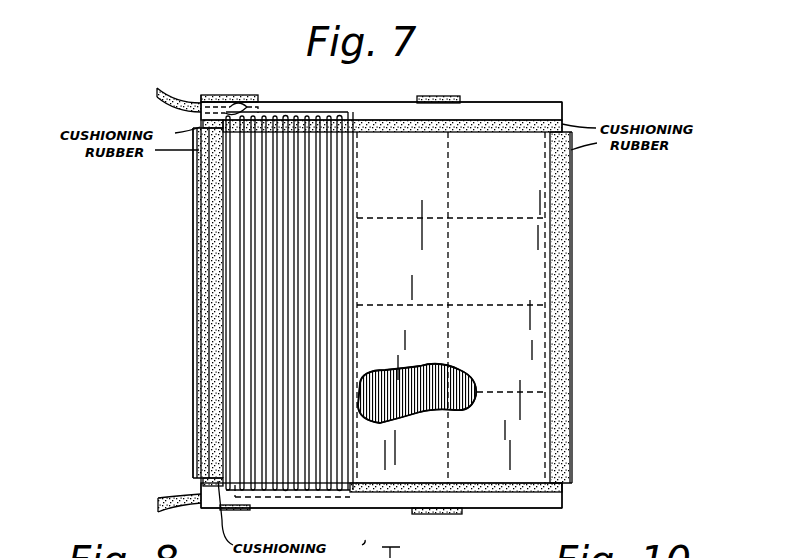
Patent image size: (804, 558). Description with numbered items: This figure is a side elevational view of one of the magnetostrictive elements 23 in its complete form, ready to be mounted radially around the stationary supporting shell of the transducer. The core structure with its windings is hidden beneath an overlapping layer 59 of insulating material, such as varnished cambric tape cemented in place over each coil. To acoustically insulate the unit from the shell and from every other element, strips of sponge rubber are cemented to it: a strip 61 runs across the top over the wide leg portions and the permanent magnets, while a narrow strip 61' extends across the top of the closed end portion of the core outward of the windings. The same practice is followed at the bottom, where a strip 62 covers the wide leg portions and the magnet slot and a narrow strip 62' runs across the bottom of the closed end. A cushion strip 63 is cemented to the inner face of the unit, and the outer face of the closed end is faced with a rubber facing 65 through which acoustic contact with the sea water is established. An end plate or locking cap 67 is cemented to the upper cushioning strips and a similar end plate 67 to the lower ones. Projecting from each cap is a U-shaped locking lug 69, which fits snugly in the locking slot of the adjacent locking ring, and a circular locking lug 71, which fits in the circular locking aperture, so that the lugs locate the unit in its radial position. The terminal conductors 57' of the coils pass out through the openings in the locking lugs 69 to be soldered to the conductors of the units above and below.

The magnetostrictive element 23 is at (183, 253).
The terminal conductor 57' is at (179, 300).
The overlapping layer of insulating material 59 is at (243, 320).
The strip of sponge rubber 61 is at (381, 93).
The narrow strip of sponge rubber 61' is at (194, 122).
The strip of sponge rubber 62 is at (381, 514).
The narrow strip of sponge rubber 62' is at (183, 475).
The cushion strip 63 is at (574, 297).
The rubber facing 65 is at (199, 378).
The end plate or locking cap 67 is at (517, 107).
The U-shaped locking lug 69 is at (243, 104).
The circular locking lug 71 is at (441, 97).